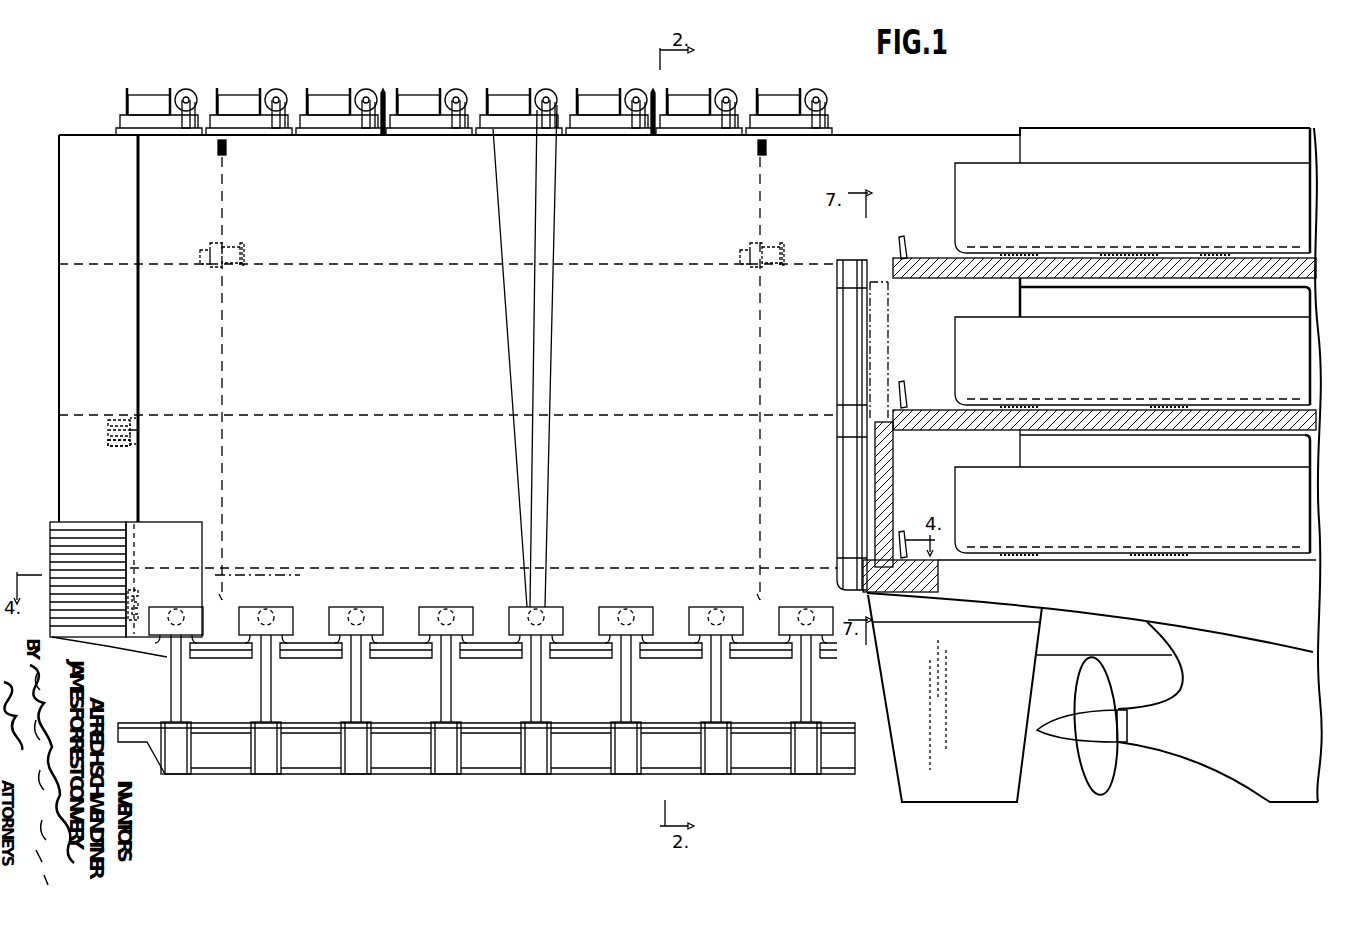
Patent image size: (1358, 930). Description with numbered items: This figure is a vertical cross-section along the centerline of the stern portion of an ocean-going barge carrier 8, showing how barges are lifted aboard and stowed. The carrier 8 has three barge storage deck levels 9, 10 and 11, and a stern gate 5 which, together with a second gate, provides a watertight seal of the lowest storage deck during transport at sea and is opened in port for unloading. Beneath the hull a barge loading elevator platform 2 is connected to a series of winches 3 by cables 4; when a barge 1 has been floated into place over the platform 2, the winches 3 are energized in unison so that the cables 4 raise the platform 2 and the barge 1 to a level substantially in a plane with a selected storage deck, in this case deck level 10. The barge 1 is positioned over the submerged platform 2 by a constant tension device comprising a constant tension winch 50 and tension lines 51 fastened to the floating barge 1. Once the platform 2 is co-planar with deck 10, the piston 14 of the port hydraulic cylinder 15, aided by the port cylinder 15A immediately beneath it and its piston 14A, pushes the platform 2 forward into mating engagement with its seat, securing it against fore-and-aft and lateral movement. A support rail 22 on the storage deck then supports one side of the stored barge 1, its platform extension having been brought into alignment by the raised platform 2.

The barge 1 is at (1207, 375).
The barge loading elevator platform 2 is at (500, 778).
The winches 3 is at (523, 94).
The cables 4 is at (554, 227).
The stern gate 5 is at (872, 496).
The ocean-going barge carrier 8 is at (1281, 603).
The barge storage deck level 9 is at (1318, 564).
The barge storage deck level 10 is at (1274, 412).
The barge storage deck level 11 is at (1282, 262).
The piston 14 is at (142, 420).
The port mating piston 14A is at (140, 442).
The port hydraulic cylinder 15 is at (113, 421).
The port cylinder 15A is at (116, 445).
The support rail 22 is at (1108, 428).
The constant tension winch 50 is at (224, 267).
The tension lines 51 is at (222, 206).